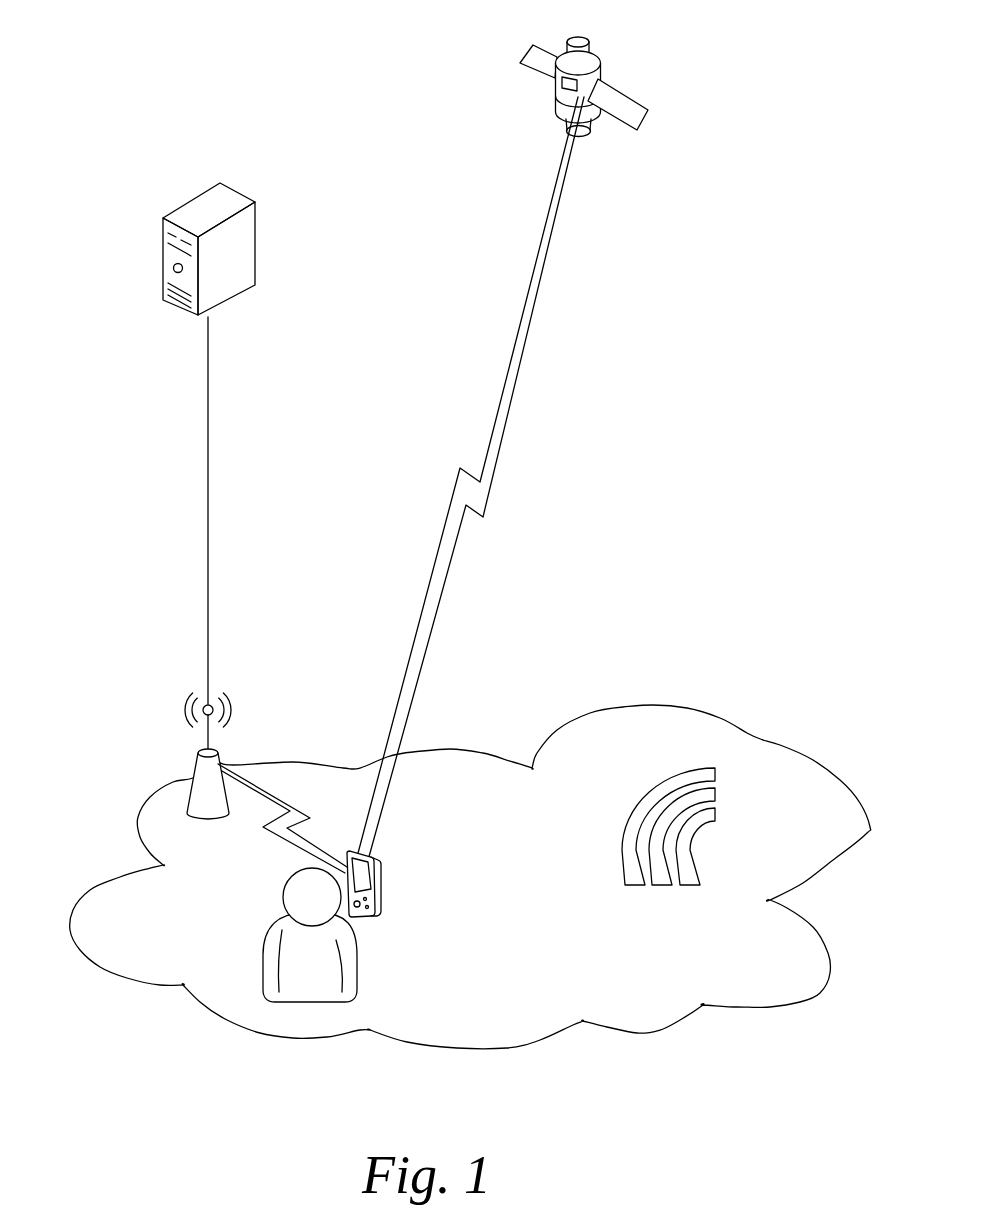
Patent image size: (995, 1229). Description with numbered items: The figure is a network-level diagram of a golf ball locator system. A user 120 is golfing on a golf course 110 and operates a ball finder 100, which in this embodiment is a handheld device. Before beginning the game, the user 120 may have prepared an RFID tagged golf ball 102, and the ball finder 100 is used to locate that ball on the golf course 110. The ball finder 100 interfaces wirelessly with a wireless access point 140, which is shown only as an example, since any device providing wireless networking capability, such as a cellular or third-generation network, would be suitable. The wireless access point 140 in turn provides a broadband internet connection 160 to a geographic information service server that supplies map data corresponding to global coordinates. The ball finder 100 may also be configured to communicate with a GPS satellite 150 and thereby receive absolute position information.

The ball finder 100 is at (382, 890).
The RFID tagged golf ball 102 is at (732, 850).
The golf course 110 is at (660, 708).
The user 120 is at (263, 938).
The wireless access point 140 is at (181, 710).
The satellite 150 is at (602, 74).
The broadband internet connection 160 is at (193, 195).